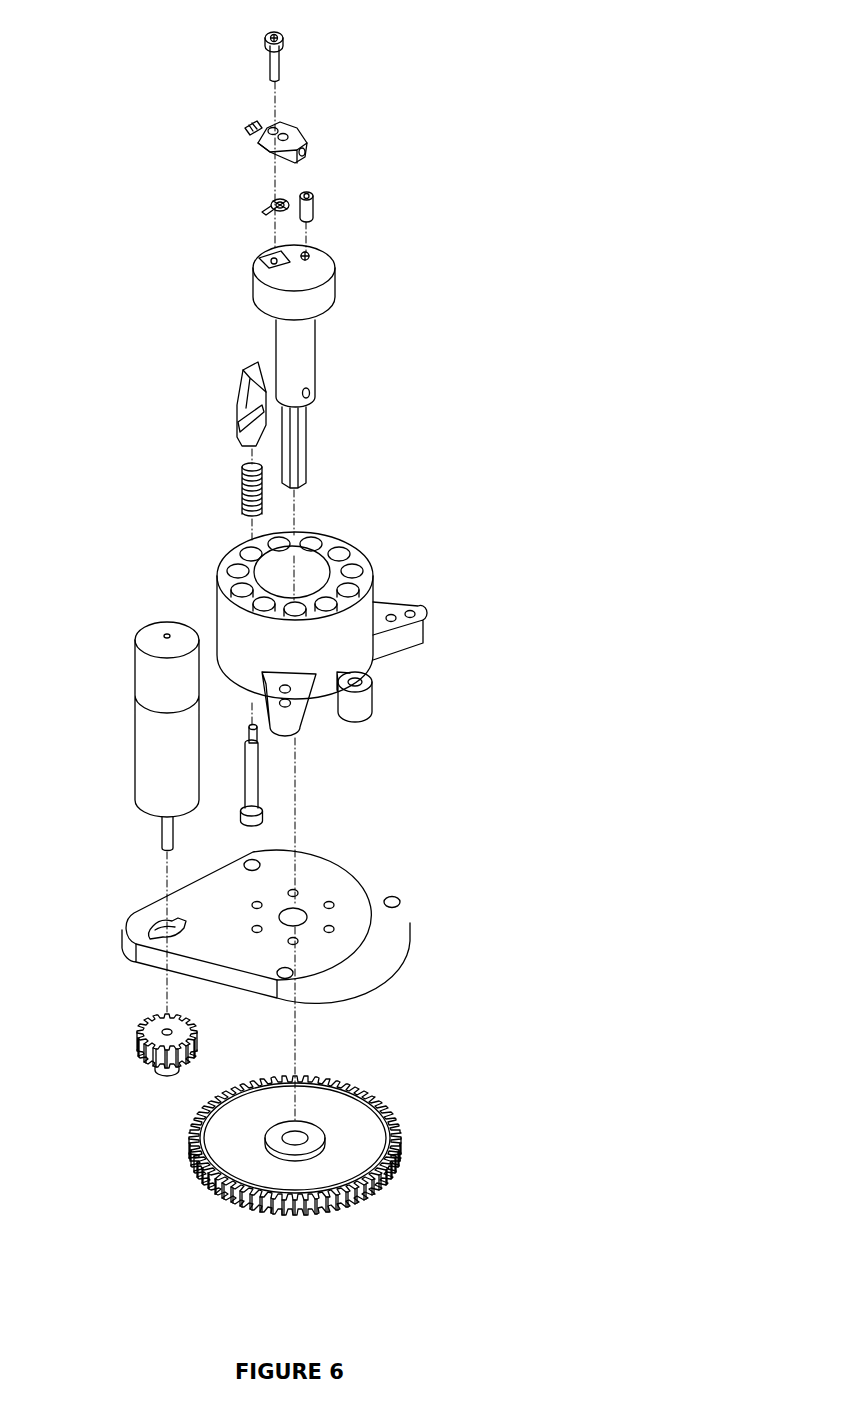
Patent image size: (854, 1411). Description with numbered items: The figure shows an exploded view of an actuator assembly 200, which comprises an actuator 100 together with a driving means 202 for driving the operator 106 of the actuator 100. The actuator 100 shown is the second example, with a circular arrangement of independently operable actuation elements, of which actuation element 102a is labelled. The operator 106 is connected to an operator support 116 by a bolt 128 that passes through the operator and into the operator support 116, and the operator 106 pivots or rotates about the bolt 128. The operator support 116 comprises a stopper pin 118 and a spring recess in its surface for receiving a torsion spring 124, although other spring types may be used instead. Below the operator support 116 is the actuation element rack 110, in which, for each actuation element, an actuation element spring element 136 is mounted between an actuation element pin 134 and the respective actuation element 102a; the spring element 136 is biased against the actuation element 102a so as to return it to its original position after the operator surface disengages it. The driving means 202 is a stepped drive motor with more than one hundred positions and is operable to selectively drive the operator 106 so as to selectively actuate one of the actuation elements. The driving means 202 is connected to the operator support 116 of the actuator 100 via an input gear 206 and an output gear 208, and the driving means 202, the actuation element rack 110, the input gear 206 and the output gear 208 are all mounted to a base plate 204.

The actuator 100 is at (192, 80).
The actuator assembly 200 is at (705, 61).
The actuation element 102a is at (240, 380).
The operator 106 is at (314, 137).
The actuation element rack 110 is at (219, 590).
The operator support 116 is at (337, 283).
The stopper pin 118 is at (315, 213).
The torsion spring 124 is at (266, 205).
The bolt 128 is at (283, 62).
The actuation element pin 134 is at (260, 787).
The actuation element spring element 136 is at (240, 486).
The driving means 202 is at (136, 755).
The base plate 204 is at (410, 940).
The input gear 206 is at (143, 1038).
The output gear 208 is at (398, 1144).